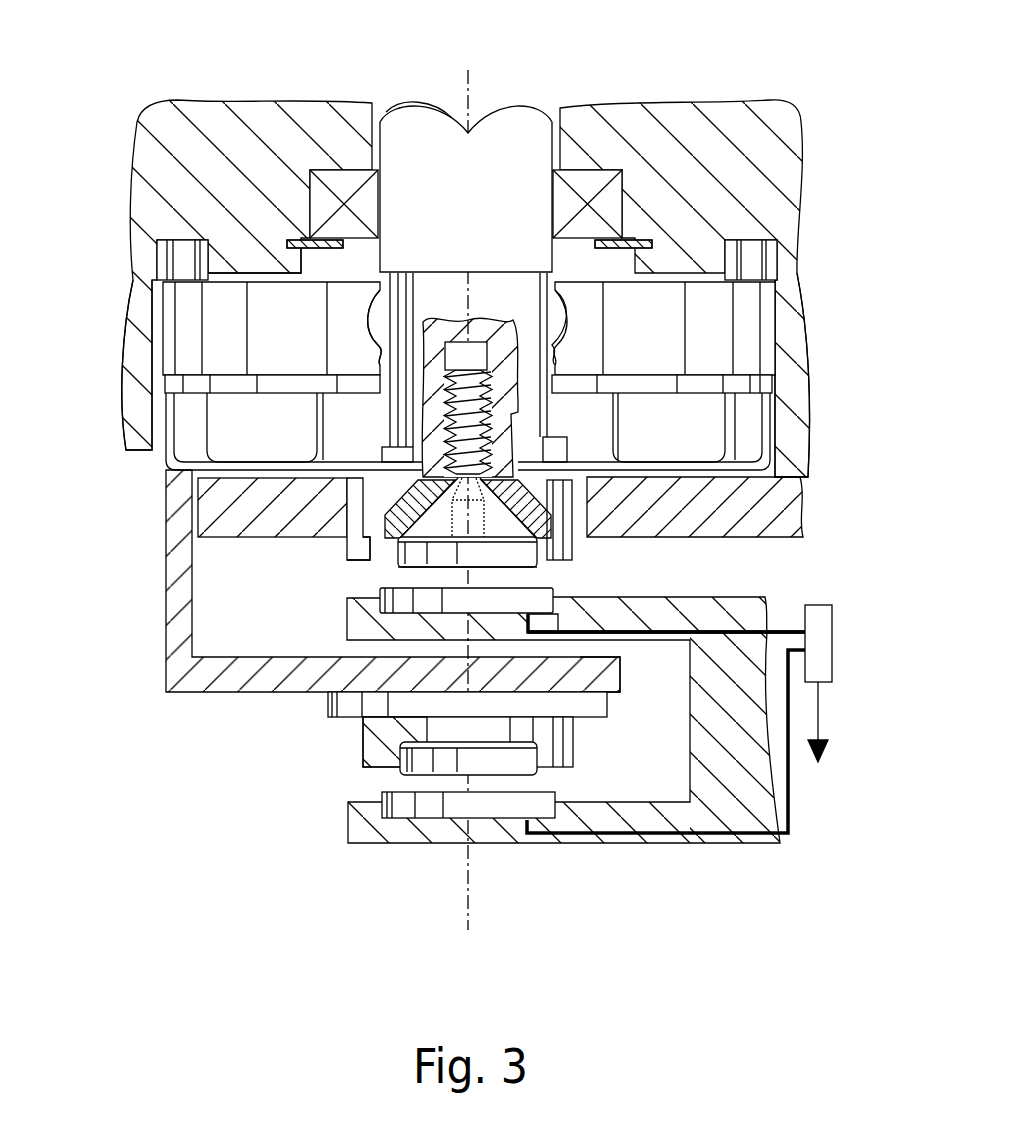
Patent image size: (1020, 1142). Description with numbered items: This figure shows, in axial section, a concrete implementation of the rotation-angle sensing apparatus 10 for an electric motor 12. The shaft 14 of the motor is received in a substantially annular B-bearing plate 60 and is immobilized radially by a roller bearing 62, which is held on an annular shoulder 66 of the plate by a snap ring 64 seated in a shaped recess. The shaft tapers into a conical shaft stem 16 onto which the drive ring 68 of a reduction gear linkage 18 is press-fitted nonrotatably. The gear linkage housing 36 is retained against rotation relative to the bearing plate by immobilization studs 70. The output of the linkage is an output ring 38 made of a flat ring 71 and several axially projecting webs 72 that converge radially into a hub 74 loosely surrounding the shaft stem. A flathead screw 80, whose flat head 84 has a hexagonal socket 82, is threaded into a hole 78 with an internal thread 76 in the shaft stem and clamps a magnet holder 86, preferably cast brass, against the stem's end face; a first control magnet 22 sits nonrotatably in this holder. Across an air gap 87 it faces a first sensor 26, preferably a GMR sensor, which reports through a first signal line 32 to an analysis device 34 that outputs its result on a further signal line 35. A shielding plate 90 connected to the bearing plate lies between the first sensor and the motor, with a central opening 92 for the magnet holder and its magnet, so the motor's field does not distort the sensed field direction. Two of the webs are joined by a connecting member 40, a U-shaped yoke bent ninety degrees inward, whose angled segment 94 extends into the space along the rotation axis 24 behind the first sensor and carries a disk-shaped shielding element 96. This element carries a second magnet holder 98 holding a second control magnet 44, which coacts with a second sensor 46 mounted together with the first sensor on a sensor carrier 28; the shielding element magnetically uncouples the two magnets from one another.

The apparatus 10 is at (441, 661).
The electric motor 12 is at (458, 249).
The shaft 14 is at (400, 118).
The shaft stem 16 is at (523, 430).
The reduction gear linkage 18 is at (135, 378).
The first control magnet 22 is at (530, 577).
The rotation axis 24 is at (490, 105).
The first sensor 26 is at (405, 612).
The sensor carrier 28 is at (742, 607).
The first signal line 32 is at (688, 630).
The analysis device 34 is at (832, 658).
The further signal line 35 is at (818, 733).
The gear linkage housing 36 is at (752, 306).
The output ring 38 is at (298, 414).
The connecting member 40 is at (180, 597).
The second control magnet 44 is at (530, 762).
The second sensor 46 is at (407, 800).
The B-bearing plate 60 is at (228, 118).
The roller bearing 62 is at (596, 180).
The snap ring 64 is at (345, 250).
The annular shoulder 66 is at (240, 236).
The drive ring 68 is at (548, 328).
The immobilization studs 70 is at (190, 253).
The flat ring 71 is at (770, 386).
The webs 72 is at (770, 436).
The hub 74 is at (392, 455).
The internal thread 76 is at (488, 392).
The hole 78 is at (458, 345).
The flathead screw 80 is at (430, 522).
The hexagonal socket 82 is at (523, 540).
The flat head 84 is at (553, 538).
The magnet holder 86 is at (370, 547).
The air gap 87 is at (420, 580).
The shielding plate 90 is at (230, 527).
The central opening 92 is at (353, 524).
The angled segment 94 is at (624, 668).
The shielding element 96 is at (604, 692).
The second magnet holder 98 is at (556, 739).